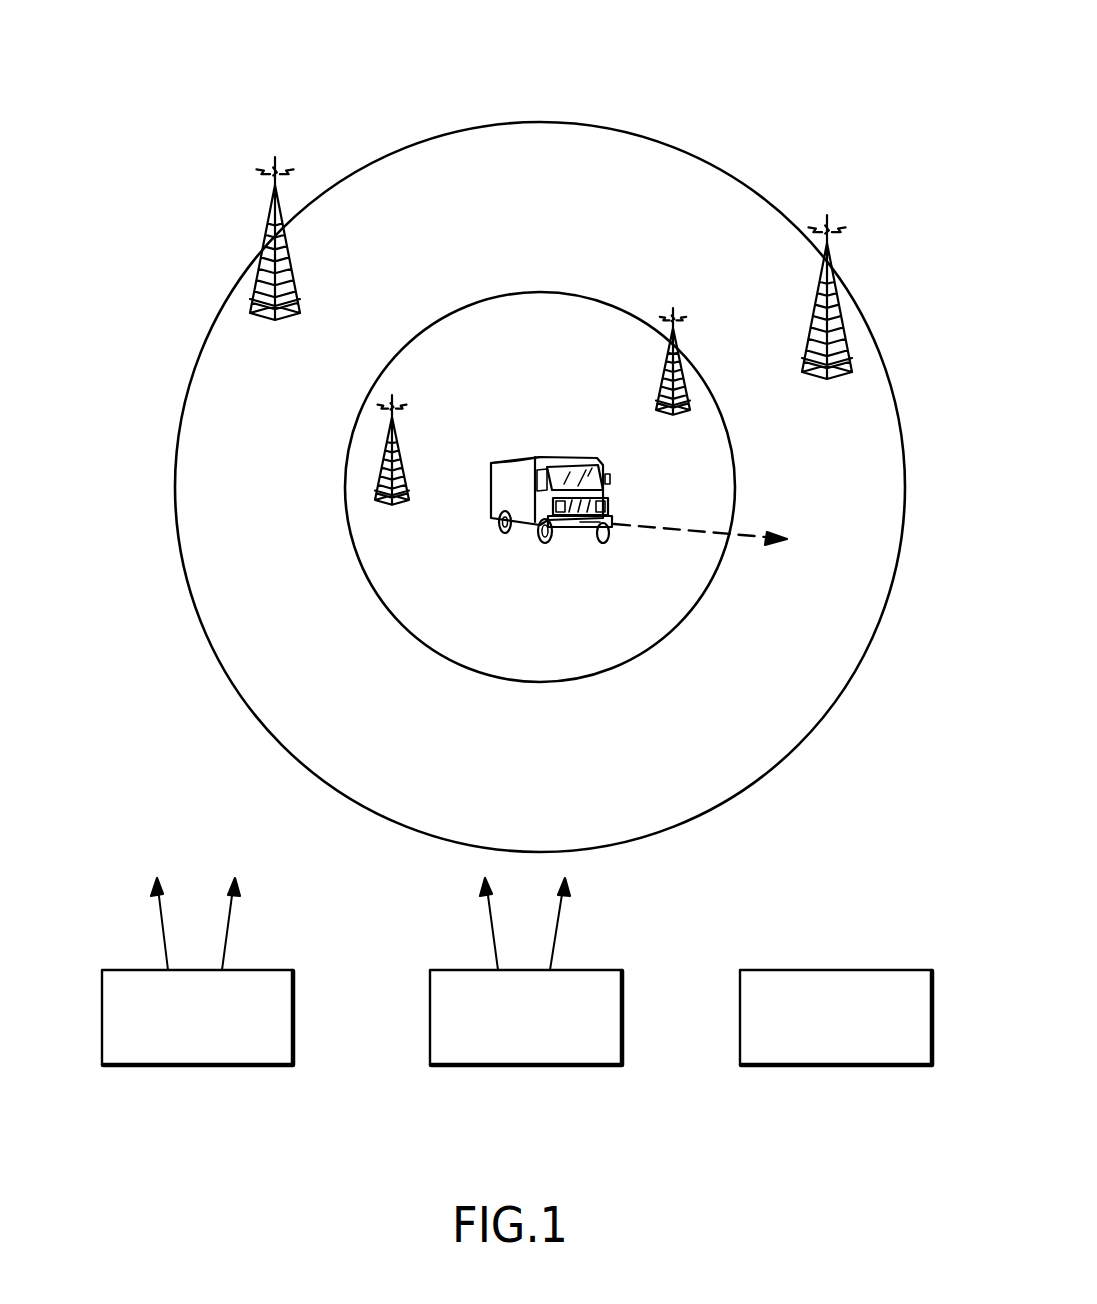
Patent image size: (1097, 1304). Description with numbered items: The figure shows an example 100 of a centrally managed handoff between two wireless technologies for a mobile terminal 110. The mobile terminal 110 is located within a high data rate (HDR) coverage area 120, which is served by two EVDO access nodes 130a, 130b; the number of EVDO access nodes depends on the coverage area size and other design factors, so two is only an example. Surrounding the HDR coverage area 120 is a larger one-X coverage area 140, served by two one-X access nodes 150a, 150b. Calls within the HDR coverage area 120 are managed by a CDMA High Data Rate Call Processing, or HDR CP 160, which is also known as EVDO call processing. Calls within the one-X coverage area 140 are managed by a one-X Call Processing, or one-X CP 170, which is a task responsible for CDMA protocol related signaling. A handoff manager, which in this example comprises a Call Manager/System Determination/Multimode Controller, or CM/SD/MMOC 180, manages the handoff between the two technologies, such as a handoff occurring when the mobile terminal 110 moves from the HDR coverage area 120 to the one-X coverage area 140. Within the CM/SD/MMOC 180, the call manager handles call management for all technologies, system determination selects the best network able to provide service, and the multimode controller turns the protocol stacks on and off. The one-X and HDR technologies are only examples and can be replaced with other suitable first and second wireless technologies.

The example of a centrally managed handoff 100 is at (772, 85).
The mobile terminal 110 is at (530, 497).
The high data rate (HDR) coverage area 120 is at (563, 664).
The EVDO access node 130a is at (406, 465).
The EVDO access node 130b is at (661, 380).
The 1X coverage area 140 is at (563, 829).
The 1X access node 150a is at (296, 291).
The 1X access node 150b is at (810, 333).
The CDMA High Data Rate Call Processing (HDR CP) 160 is at (532, 1065).
The 1X Call Processing (1X CP) 170 is at (202, 1065).
The Call Manager/System Determination/Multimode Controller (CM/SD/MMOC) 180 is at (842, 1065).